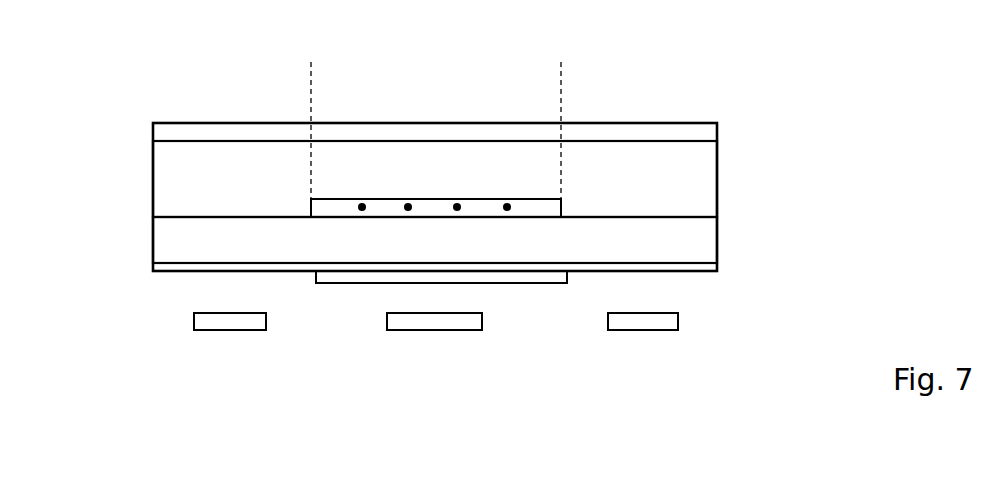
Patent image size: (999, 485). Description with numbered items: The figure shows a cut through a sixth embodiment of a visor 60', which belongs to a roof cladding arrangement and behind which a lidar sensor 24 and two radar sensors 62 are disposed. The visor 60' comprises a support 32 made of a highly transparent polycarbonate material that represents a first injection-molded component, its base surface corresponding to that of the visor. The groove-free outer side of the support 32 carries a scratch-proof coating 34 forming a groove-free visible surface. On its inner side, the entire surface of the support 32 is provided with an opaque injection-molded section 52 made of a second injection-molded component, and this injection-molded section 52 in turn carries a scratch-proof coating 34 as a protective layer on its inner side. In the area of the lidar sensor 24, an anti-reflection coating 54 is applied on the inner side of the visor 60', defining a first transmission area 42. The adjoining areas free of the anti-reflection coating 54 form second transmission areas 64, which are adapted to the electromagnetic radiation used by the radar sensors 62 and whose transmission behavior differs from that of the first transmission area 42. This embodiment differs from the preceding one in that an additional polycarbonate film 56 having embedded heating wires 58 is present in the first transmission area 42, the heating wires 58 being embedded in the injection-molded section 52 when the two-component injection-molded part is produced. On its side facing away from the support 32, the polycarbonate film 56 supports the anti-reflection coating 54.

The visor 60' is at (494, 154).
The scratch-proof coating 34 is at (190, 123).
The support 32 is at (688, 190).
The injection-molded section 52 is at (712, 230).
The second transmission areas 64 is at (250, 104).
The first transmission area 42 is at (444, 104).
The polycarbonate film 56 is at (480, 207).
The heating wires 58 is at (362, 211).
The anti-reflection coating 54 is at (497, 280).
The lidar sensor 24 is at (436, 322).
The radar sensors 62 is at (228, 325).